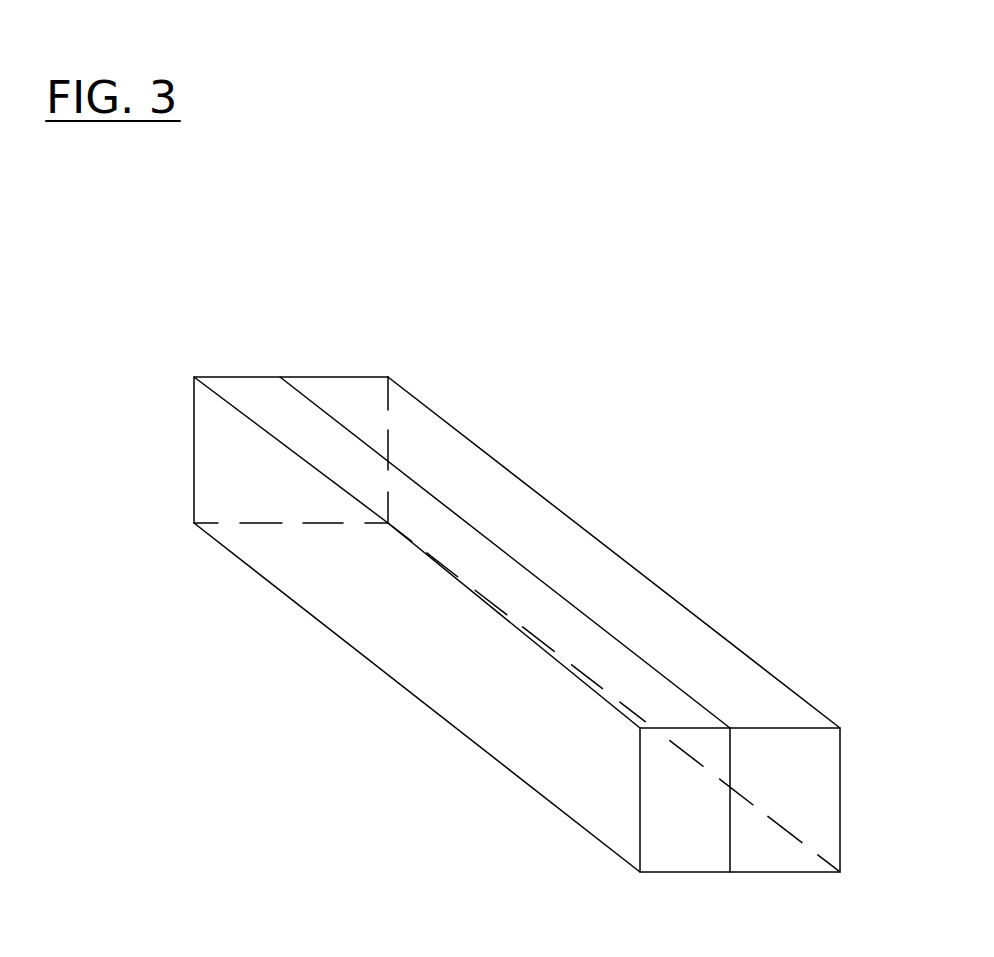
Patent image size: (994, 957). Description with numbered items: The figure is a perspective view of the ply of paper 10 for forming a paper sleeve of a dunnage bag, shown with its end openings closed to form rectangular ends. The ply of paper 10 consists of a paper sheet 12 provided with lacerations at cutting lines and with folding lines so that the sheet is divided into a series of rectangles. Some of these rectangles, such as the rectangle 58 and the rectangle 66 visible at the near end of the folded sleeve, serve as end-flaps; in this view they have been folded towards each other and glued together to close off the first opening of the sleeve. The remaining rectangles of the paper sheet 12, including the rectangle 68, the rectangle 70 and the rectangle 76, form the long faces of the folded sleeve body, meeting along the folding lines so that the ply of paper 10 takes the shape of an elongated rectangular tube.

The ply of paper 10 is at (877, 158).
The paper sheet 12 is at (585, 532).
The rectangle 58 is at (685, 800).
The rectangle 66 is at (785, 800).
The rectangle 68 is at (614, 689).
The rectangle 70 is at (417, 697).
The rectangle 76 is at (505, 552).